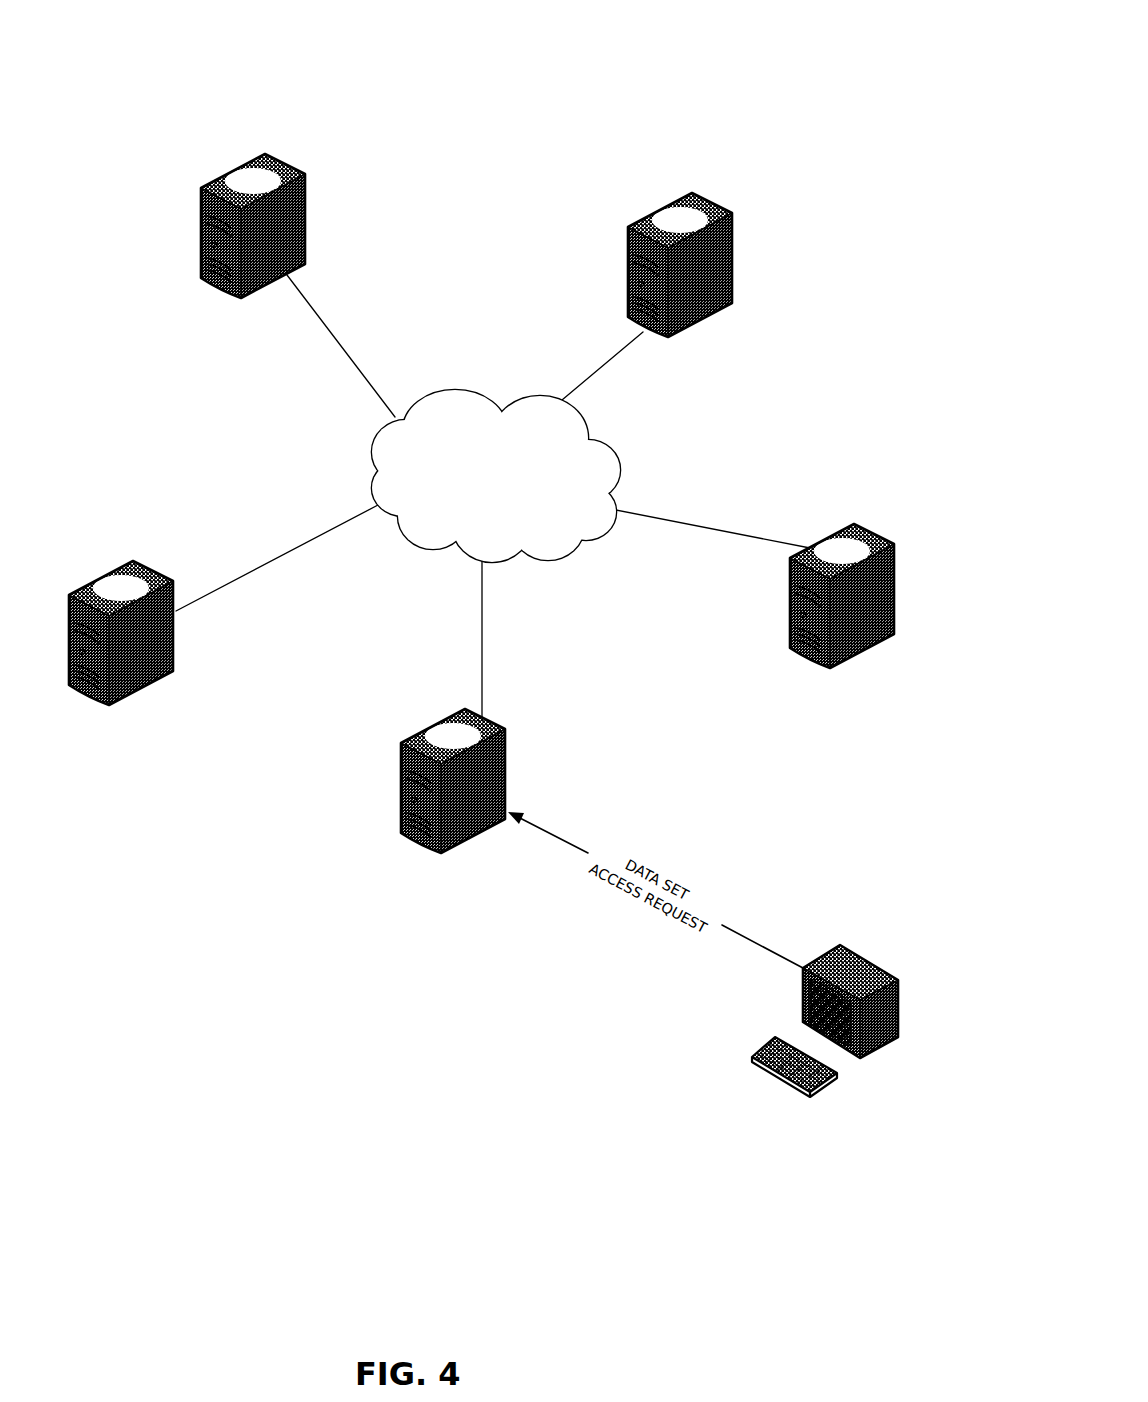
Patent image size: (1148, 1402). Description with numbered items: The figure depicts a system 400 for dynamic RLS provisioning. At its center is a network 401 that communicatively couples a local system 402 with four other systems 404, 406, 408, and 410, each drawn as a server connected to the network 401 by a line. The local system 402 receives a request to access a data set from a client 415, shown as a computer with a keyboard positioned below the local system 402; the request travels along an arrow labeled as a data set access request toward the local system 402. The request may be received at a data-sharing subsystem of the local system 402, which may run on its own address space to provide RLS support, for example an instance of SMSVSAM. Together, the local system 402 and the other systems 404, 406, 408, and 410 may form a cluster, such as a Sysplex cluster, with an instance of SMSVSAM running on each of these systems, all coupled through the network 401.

The system 400 is at (775, 72).
The network 401 is at (472, 520).
The local system 402 is at (456, 851).
The system 404 is at (128, 697).
The system 406 is at (199, 275).
The system 408 is at (733, 263).
The system 410 is at (868, 531).
The client 415 is at (888, 1047).